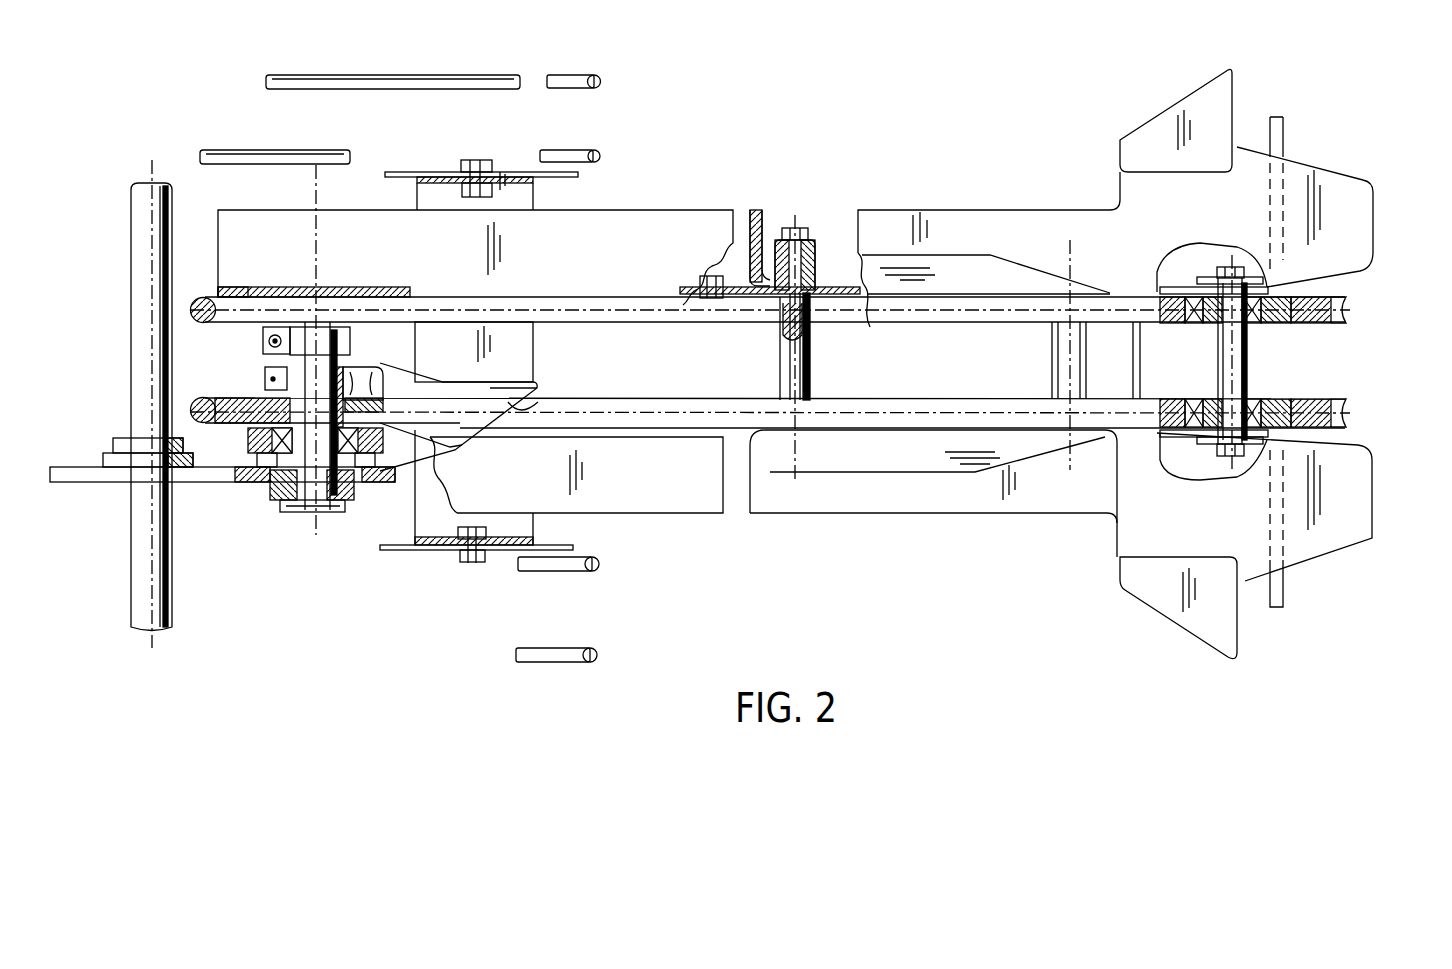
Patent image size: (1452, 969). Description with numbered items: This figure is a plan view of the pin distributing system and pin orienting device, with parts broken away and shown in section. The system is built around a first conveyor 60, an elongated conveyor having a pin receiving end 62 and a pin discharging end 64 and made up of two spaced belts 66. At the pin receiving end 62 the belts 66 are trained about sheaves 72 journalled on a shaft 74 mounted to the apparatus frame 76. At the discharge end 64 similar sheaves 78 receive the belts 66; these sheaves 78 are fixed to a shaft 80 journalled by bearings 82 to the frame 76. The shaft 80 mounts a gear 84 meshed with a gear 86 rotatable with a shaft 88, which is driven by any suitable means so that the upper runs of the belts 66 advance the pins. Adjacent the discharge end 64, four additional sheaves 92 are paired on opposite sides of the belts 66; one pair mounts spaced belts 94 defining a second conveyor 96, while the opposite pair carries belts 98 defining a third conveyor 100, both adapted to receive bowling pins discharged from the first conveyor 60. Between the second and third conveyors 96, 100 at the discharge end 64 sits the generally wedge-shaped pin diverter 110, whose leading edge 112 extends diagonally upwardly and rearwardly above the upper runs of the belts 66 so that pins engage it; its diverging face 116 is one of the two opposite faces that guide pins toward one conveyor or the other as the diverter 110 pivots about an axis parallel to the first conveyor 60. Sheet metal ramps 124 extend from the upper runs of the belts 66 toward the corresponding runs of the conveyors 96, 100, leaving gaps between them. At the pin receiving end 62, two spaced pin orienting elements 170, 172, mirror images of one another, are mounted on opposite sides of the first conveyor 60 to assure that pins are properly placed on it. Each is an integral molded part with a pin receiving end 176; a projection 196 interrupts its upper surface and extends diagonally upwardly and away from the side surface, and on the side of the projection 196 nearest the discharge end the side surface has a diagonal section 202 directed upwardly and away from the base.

The first conveyor 60 is at (668, 438).
The pin receiving end 62 is at (1307, 366).
The pin discharging end 64 is at (386, 300).
The belts 66 is at (203, 298).
The sheaves 72 is at (1337, 397).
The shaft 74 is at (1214, 368).
The apparatus frame 76 is at (1284, 594).
The sheaves 78 is at (218, 325).
The shaft 80 is at (306, 493).
The bearings 82 is at (317, 457).
The gear 84 is at (378, 481).
The gear 86 is at (86, 477).
The shaft 88 is at (136, 590).
The additional sheaves 92 is at (597, 90).
The spaced belts 94 is at (341, 73).
The second conveyor 96 is at (483, 64).
The belts 98 is at (522, 572).
The third conveyor 100 is at (559, 665).
The pin diverter 110 is at (495, 378).
The leading edge 112 is at (542, 402).
The face 116 is at (433, 378).
The sheet metal ramps 124 is at (676, 222).
The pin orienting element 170 is at (967, 512).
The pin orienting element 172 is at (946, 203).
The pin receiving end 176 is at (1380, 193).
The projection 196 is at (1172, 115).
The diagonal section 202 is at (992, 284).